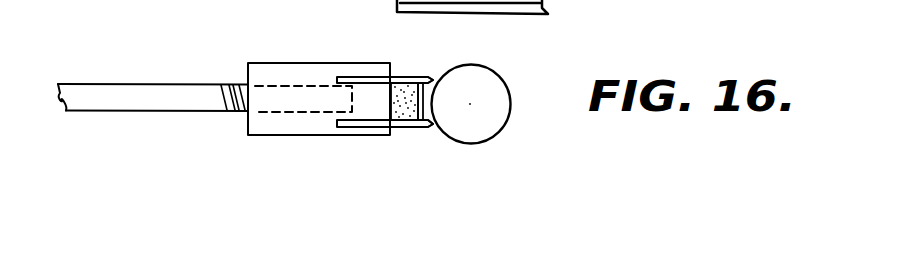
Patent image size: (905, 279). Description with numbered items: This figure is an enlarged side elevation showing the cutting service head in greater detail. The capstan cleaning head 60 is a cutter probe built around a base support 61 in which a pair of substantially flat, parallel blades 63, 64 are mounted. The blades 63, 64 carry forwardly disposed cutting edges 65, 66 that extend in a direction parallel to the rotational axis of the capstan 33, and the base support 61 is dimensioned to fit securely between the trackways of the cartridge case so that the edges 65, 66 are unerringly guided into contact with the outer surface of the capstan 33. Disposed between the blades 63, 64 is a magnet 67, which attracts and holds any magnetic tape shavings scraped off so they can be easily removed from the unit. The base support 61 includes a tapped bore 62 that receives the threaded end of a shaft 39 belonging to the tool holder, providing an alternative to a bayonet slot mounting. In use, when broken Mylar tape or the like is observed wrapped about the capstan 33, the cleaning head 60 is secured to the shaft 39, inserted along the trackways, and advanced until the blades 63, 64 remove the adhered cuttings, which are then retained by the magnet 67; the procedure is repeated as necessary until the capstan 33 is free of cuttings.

The capstan 33 is at (505, 87).
The shaft 39 is at (122, 111).
The capstan cleaning head 60 is at (337, 147).
The base support 61 is at (306, 70).
The tapped bore 62 is at (282, 114).
The blade 63 is at (402, 130).
The blade 64 is at (398, 75).
The cutting edge 65 is at (433, 127).
The cutting edge 66 is at (433, 77).
The magnet 67 is at (407, 83).